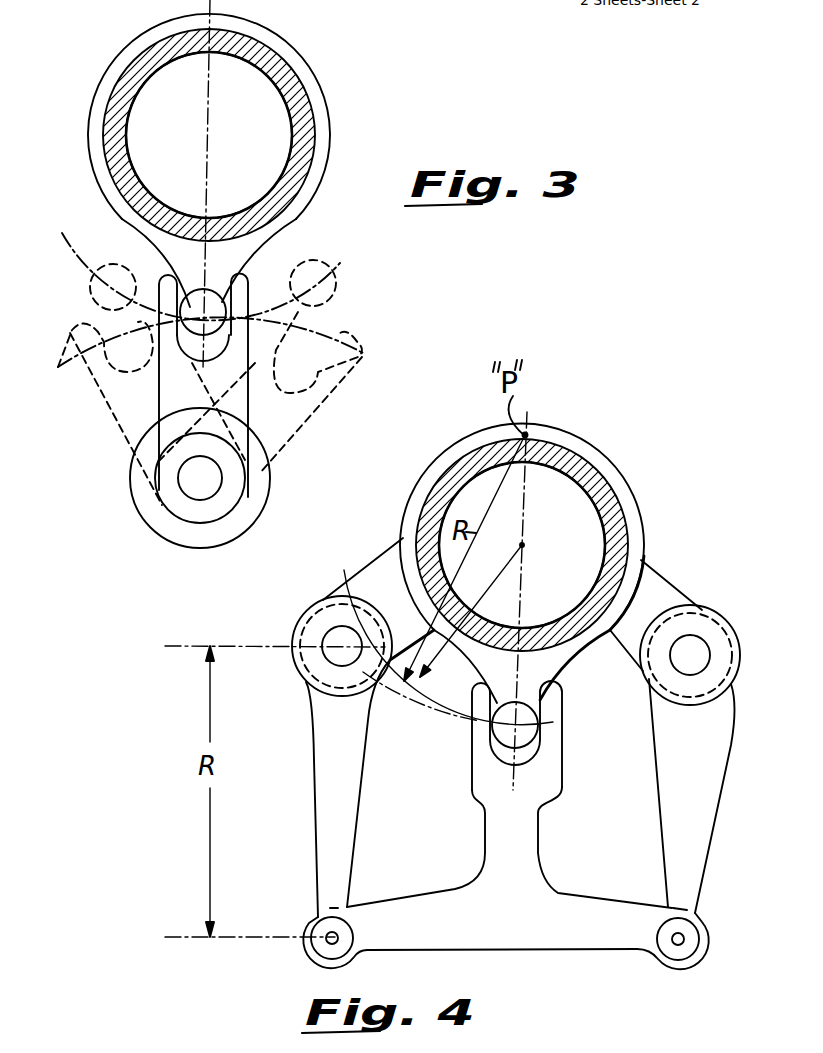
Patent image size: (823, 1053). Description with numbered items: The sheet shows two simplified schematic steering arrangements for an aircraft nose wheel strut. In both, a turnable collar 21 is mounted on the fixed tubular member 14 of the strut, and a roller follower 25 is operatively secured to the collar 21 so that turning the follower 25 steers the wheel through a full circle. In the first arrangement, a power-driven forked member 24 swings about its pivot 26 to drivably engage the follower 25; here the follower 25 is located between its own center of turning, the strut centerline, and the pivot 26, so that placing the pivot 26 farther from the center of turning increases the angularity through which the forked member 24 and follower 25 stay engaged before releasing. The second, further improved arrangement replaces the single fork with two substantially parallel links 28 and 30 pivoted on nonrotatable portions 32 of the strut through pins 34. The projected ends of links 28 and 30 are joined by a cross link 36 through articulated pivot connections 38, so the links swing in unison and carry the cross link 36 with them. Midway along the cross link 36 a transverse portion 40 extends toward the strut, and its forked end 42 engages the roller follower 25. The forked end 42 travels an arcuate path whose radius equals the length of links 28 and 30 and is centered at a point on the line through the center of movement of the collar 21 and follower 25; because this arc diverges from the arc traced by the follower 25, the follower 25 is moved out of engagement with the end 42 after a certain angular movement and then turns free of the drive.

In FIG. 3, the fixed tubular member 14 is at (291, 85).
In FIG. 4, the fixed tubular member 14 is at (548, 447).
In FIG. 3, the turnable collar 21 is at (322, 118).
In FIG. 4, the turnable collar 21 is at (608, 472).
In FIG. 3, the forked member 24 is at (78, 348).
In FIG. 3, the follower 25 is at (210, 300).
In FIG. 4, the follower 25 is at (500, 730).
In FIG. 3, the pivot 26 is at (196, 480).
In FIG. 4, the link 28 is at (322, 773).
In FIG. 4, the link 30 is at (698, 810).
In FIG. 4, the nonrotatable portions of the strut 32 is at (362, 572).
In FIG. 4, the pins 34 is at (330, 650).
In FIG. 4, the cross link 36 is at (567, 949).
In FIG. 4, the articulated pivot connections 38 is at (330, 941).
In FIG. 4, the transverse portion 40 is at (527, 842).
In FIG. 4, the forked end 42 is at (556, 733).